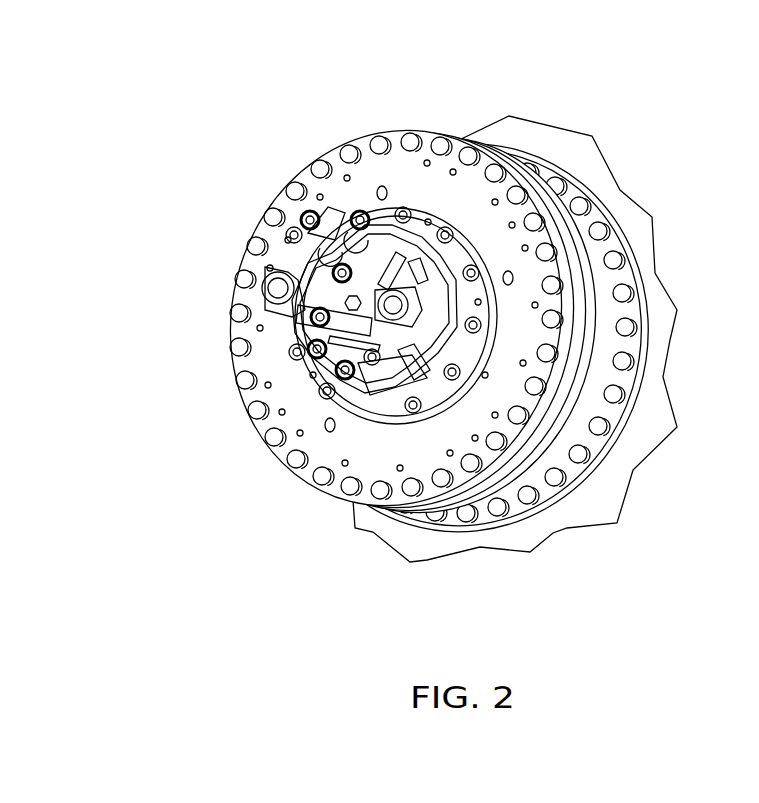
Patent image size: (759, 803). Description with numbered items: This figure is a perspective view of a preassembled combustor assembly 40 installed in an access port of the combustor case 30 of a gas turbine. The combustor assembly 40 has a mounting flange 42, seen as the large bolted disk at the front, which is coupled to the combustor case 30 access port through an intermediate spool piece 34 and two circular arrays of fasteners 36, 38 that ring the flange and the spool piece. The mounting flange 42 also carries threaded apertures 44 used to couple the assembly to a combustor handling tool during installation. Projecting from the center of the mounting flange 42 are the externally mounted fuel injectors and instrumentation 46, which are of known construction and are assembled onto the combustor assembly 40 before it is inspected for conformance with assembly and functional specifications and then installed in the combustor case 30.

The combustor case 30 is at (620, 483).
The intermediate spool piece 34 is at (570, 240).
The fasteners 36 is at (593, 423).
The fasteners 38 is at (540, 343).
The combustor assembly 40 is at (415, 315).
The mounting flange 42 is at (481, 212).
The threaded apertures 44 is at (448, 507).
The fuel injectors and instrumentation 46 is at (403, 380).